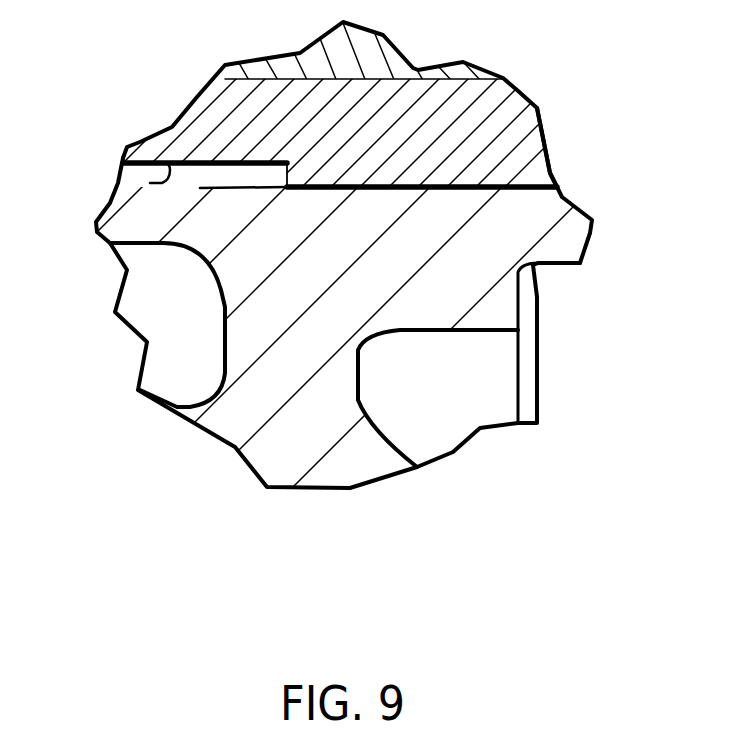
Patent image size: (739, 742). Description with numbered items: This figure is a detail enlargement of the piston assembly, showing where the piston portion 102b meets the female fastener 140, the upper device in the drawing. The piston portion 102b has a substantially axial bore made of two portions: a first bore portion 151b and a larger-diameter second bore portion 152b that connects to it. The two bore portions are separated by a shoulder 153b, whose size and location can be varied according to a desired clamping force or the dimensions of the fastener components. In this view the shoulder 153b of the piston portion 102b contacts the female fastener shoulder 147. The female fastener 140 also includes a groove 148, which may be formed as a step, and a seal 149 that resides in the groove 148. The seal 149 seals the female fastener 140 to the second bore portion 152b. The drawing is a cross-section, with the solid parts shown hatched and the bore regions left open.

The female fastener 140 is at (193, 98).
The female fastener shoulder 147 is at (290, 166).
The groove 148 is at (410, 183).
The seal 149 is at (402, 190).
The first bore portion 151b is at (150, 183).
The second bore portion 152b is at (330, 190).
The shoulder 153b is at (200, 188).
The piston portion 102b is at (240, 440).